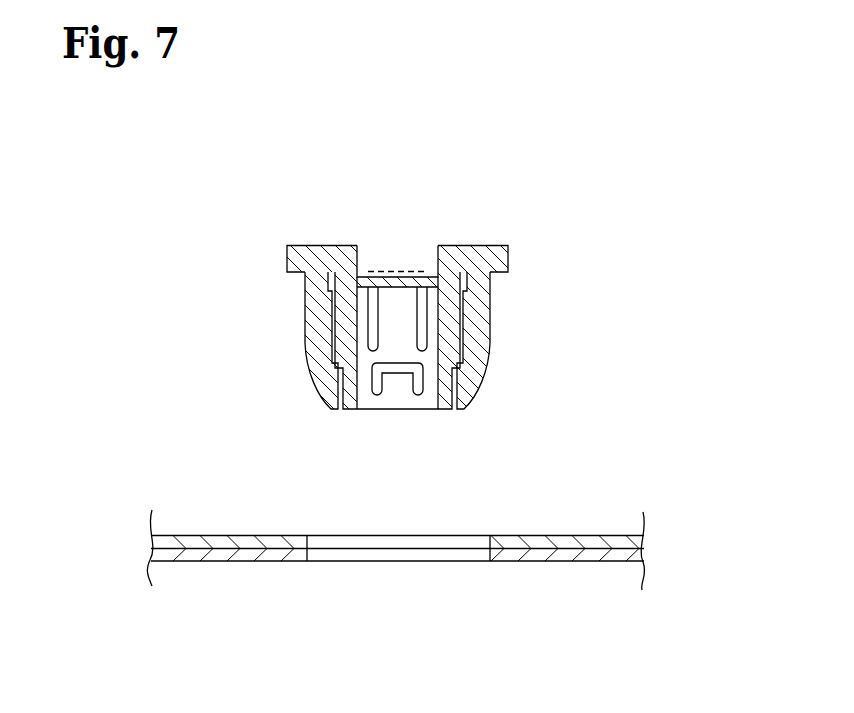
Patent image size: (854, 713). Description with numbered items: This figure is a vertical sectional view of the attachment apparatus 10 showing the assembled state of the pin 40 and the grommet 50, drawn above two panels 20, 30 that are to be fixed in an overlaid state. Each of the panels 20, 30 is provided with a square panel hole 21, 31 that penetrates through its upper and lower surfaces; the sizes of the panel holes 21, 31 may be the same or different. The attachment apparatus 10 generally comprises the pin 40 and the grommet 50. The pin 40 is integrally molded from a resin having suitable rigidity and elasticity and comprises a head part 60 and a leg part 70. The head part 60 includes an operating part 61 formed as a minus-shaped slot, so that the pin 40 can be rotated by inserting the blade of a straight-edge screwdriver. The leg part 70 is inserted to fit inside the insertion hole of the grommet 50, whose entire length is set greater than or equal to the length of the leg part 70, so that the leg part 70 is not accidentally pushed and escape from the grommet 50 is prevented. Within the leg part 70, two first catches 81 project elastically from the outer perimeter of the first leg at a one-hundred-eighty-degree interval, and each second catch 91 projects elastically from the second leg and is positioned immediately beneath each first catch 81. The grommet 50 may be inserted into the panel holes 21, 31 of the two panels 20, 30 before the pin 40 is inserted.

The attachment apparatus 10 is at (248, 203).
The panel 20 is at (529, 536).
The panel hole 21 is at (398, 535).
The panel 30 is at (577, 562).
The panel hole 31 is at (398, 561).
The pin 40 is at (670, 263).
The grommet 50 is at (485, 352).
The head part 60 is at (507, 255).
The operating part 61 is at (397, 257).
The leg part 70 is at (450, 308).
The first catch 81 is at (390, 322).
The second catch 91 is at (398, 373).